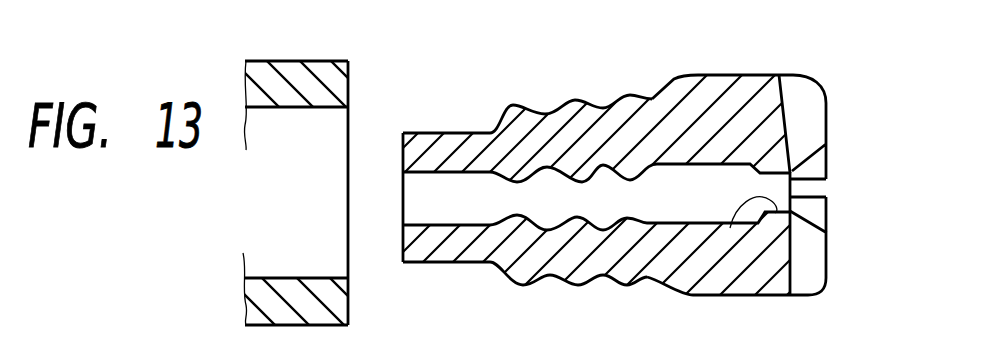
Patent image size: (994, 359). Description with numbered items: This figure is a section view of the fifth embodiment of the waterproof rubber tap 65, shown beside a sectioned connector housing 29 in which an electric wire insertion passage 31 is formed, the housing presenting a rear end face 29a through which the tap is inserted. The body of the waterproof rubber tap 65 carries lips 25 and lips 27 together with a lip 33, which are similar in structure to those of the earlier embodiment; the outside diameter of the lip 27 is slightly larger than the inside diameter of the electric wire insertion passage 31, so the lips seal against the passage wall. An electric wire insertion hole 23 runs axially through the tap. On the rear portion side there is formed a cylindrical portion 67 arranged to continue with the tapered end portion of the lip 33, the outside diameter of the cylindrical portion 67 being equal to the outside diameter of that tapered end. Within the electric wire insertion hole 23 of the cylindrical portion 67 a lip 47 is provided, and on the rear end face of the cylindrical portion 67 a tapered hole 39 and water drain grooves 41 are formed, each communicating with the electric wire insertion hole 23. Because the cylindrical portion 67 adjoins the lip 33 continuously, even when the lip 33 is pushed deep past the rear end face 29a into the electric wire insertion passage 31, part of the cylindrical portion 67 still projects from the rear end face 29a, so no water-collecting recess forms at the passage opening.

The connector housing 29 is at (281, 60).
The rear end face 29a is at (349, 75).
The electric wire insertion passage 31 is at (286, 278).
The waterproof rubber tap 65 is at (487, 118).
The lips 27 is at (622, 101).
The lips 25 is at (630, 180).
The electric wire insertion hole 23 is at (455, 195).
The lip 33 is at (668, 83).
The cylindrical portion 67 is at (718, 75).
The tapered hole 39 is at (810, 160).
The water drain grooves 41 is at (818, 187).
The lip 47 is at (730, 228).